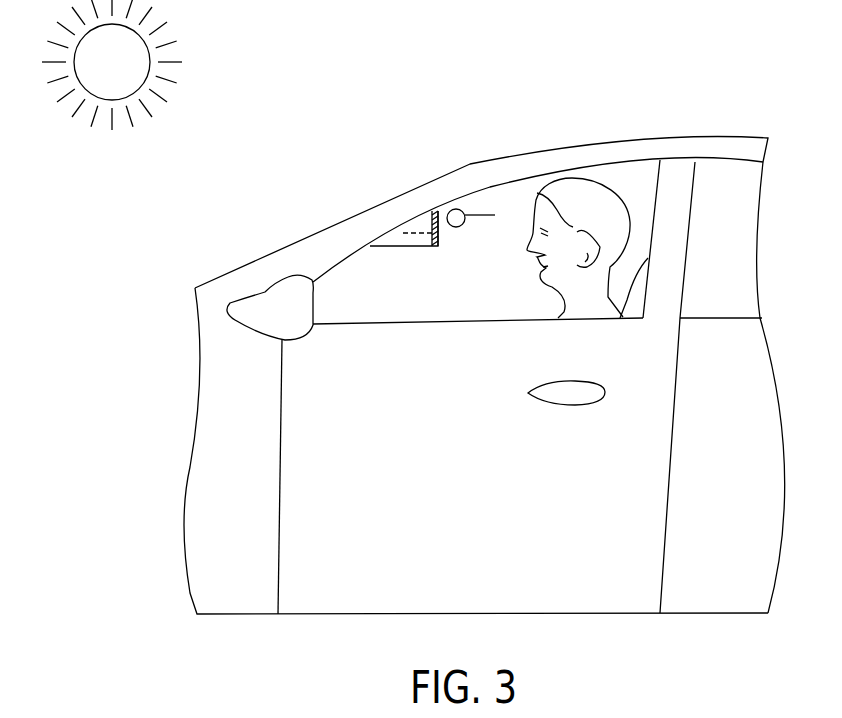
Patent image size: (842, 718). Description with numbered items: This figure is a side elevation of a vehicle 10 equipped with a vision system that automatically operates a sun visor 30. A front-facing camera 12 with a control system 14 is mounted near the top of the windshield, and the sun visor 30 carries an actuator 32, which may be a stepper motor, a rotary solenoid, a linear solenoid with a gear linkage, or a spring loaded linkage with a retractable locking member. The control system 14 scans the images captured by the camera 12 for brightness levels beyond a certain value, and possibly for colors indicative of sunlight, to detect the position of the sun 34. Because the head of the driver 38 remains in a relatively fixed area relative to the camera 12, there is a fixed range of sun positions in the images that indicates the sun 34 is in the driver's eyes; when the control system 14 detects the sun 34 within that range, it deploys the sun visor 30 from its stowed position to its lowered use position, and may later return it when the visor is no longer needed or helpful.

The vehicle 10 is at (705, 107).
The front-facing camera 12 is at (412, 248).
The control system 14 is at (432, 211).
The sun visor 30 is at (495, 215).
The actuator 32 is at (453, 227).
The sun 34 is at (150, 60).
The head of the driver 38 is at (577, 176).